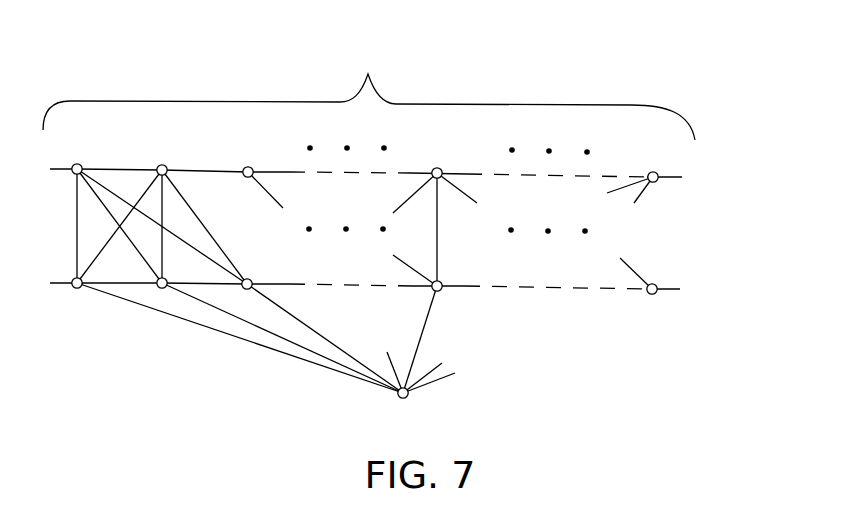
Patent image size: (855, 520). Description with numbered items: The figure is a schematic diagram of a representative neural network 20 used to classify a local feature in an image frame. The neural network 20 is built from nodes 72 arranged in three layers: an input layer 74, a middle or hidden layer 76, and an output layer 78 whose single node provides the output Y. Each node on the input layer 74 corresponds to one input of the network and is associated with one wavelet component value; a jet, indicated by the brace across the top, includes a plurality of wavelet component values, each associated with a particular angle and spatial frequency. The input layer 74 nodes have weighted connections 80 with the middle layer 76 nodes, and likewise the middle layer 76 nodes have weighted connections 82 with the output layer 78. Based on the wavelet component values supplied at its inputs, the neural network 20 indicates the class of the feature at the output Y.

The neural network 20 is at (617, 69).
The node 72 is at (72, 175).
The input layer 74 is at (407, 180).
The middle layer 76 is at (413, 282).
The output layer 78 is at (586, 401).
The weighted connections 80 is at (190, 207).
The weighted connections 82 is at (197, 323).